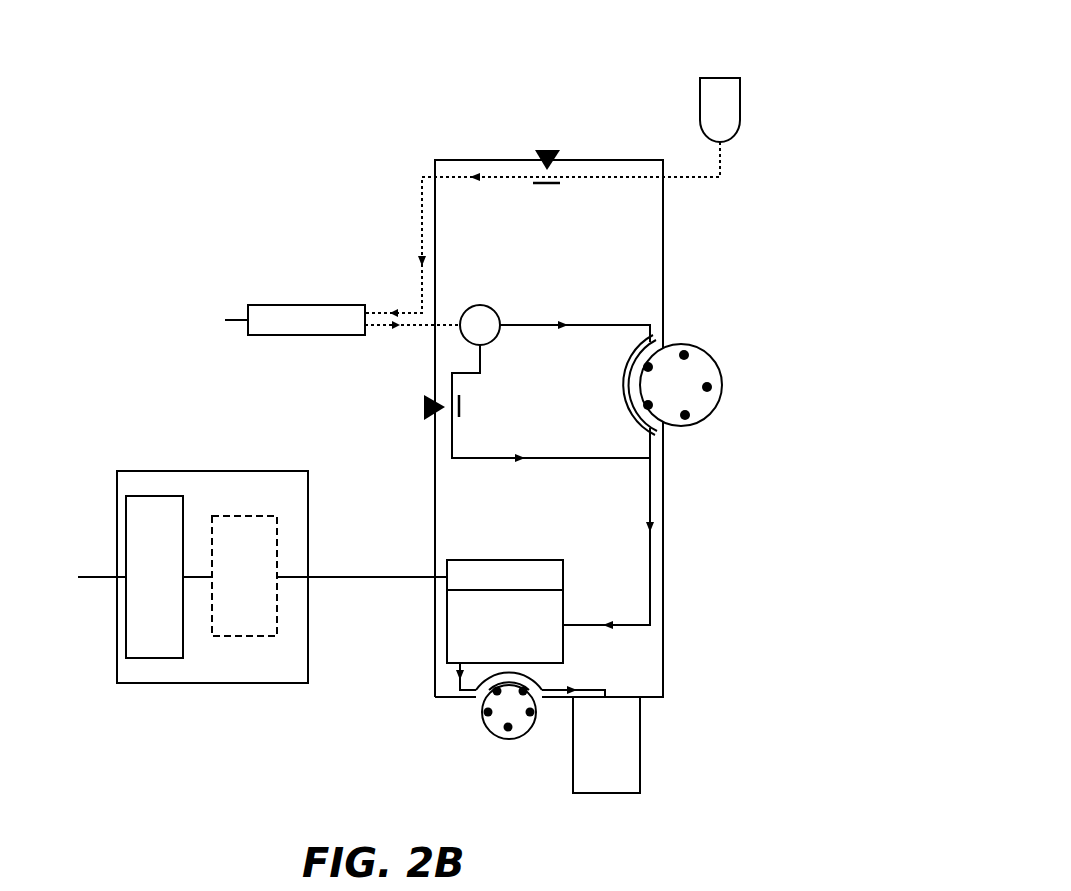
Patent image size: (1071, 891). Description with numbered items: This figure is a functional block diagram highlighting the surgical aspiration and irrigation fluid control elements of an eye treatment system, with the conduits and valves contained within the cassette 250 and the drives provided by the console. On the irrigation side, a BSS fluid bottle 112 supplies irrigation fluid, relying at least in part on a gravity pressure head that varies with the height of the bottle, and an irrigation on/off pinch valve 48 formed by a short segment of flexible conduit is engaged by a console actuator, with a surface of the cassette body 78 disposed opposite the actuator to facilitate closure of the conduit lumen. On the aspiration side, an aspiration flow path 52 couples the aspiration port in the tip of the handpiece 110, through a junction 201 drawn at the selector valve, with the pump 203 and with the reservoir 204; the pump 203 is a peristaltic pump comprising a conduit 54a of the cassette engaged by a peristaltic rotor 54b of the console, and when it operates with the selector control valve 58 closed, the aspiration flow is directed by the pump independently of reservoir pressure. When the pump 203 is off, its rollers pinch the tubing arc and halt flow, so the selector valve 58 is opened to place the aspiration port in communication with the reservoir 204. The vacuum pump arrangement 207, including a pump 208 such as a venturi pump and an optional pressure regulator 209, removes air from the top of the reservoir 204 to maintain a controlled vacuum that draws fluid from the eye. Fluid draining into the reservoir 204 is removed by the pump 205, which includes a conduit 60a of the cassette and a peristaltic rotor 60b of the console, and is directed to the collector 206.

The cassette 250 is at (409, 147).
The cassette body 78 is at (660, 247).
The BSS fluid bottle 112 is at (724, 78).
The irrigation on/off pinch valve 48 is at (544, 192).
The handpiece 110 is at (345, 305).
The aspiration flow path 52 is at (448, 321).
The selector valve 201 is at (490, 308).
The conduit 54a is at (582, 325).
The selector control valve 58 is at (471, 407).
The pump 203 is at (649, 358).
The peristaltic rotor 54b is at (640, 410).
The reservoir 204 is at (579, 594).
The vacuum pump arrangement 207 is at (195, 471).
The pump 208 is at (147, 496).
The pressure regulator 209 is at (253, 516).
The conduit 60a is at (456, 684).
The peristaltic rotor 60b is at (497, 701).
The pump 205 is at (538, 731).
The collector 206 is at (640, 760).